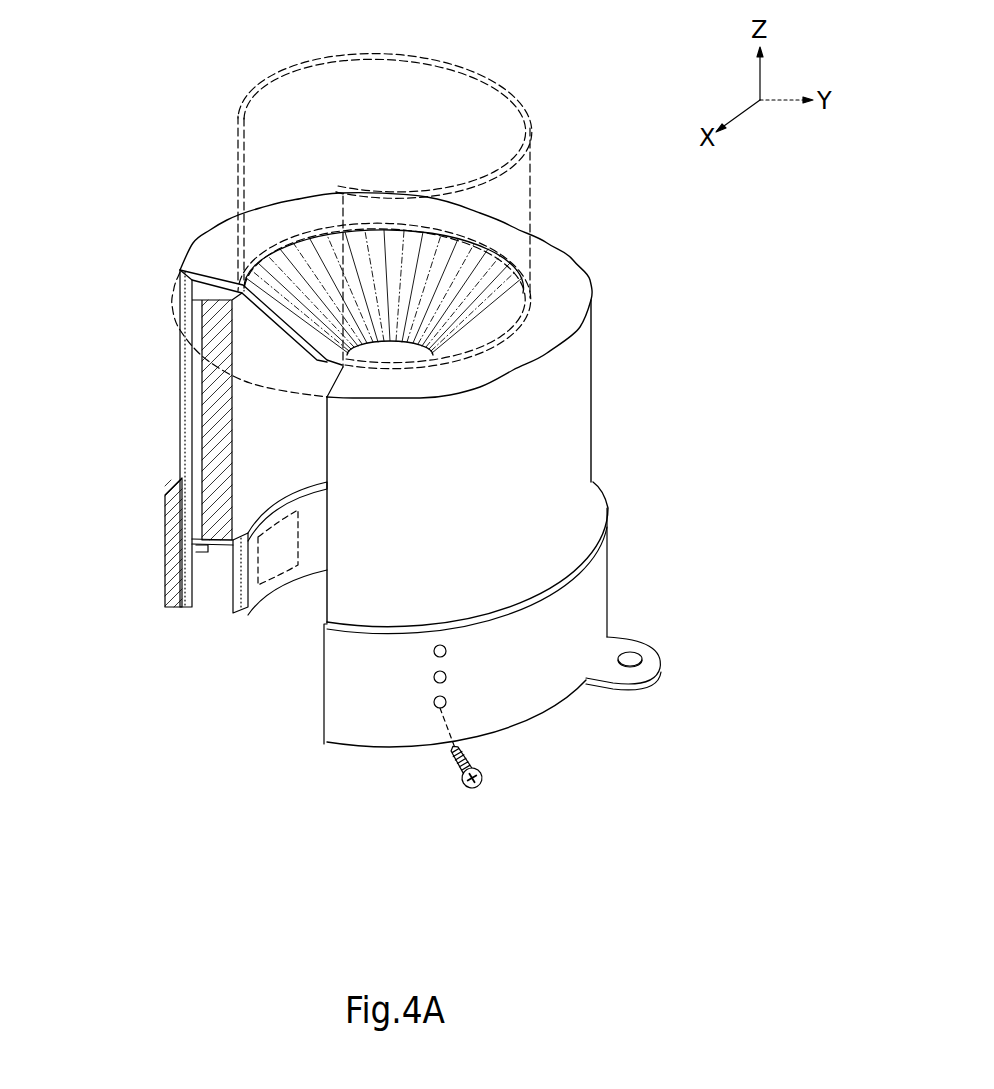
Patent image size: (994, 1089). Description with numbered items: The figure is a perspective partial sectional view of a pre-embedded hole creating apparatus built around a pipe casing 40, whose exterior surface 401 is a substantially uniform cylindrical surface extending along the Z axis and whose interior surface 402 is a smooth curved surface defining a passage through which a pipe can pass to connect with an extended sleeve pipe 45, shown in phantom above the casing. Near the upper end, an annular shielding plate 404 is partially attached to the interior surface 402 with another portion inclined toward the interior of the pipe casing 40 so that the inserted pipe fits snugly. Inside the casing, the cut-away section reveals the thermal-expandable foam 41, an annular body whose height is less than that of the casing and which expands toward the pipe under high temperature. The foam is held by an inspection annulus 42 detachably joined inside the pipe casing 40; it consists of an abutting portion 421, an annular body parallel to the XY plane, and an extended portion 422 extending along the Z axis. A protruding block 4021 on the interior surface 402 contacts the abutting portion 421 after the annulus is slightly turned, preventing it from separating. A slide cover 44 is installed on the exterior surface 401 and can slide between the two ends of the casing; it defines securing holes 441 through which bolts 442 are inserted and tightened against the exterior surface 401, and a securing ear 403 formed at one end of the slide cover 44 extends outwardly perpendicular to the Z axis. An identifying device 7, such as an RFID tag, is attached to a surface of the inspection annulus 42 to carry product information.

The pipe casing 40 is at (616, 387).
The exterior surface 401 is at (558, 482).
The interior surface 402 is at (203, 522).
The securing ear 403 is at (620, 650).
The annular shielding plate 404 is at (478, 278).
The thermal-expandable foam 41 is at (213, 388).
The inspection annulus 42 is at (150, 593).
The abutting portion 421 is at (200, 542).
The protruding block 4021 is at (197, 549).
The extended portion 422 is at (233, 570).
The slide cover 44 is at (600, 595).
The securing holes 441 is at (446, 707).
The bolts 442 is at (481, 786).
The extended sleeve pipe 45 is at (506, 190).
The identifying device 7 is at (293, 560).